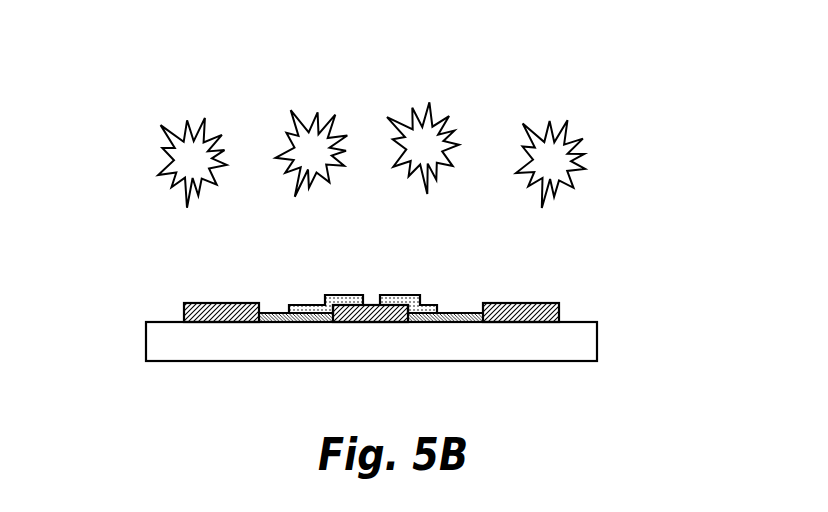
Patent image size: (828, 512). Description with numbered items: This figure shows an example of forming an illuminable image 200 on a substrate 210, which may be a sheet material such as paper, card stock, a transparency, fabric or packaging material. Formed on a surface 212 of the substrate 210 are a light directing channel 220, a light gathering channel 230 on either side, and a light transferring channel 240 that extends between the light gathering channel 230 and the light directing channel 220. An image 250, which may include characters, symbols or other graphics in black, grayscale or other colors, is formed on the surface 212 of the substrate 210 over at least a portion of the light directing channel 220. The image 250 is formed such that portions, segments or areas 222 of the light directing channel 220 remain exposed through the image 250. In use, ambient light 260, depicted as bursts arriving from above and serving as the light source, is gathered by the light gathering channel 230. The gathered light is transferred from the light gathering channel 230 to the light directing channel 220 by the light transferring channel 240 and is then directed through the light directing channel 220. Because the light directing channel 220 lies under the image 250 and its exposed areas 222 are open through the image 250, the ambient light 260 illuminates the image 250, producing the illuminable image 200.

The illuminable image 200 is at (588, 233).
The substrate 210 is at (588, 338).
The surface of substrate 212 is at (167, 323).
The light directing channel 220 is at (348, 304).
The exposed portion of light directing channel 222 is at (370, 304).
The light gathering channel 230 is at (218, 307).
The light transferring channel 240 is at (275, 315).
The image 250 is at (395, 300).
The ambient light 260 is at (517, 120).